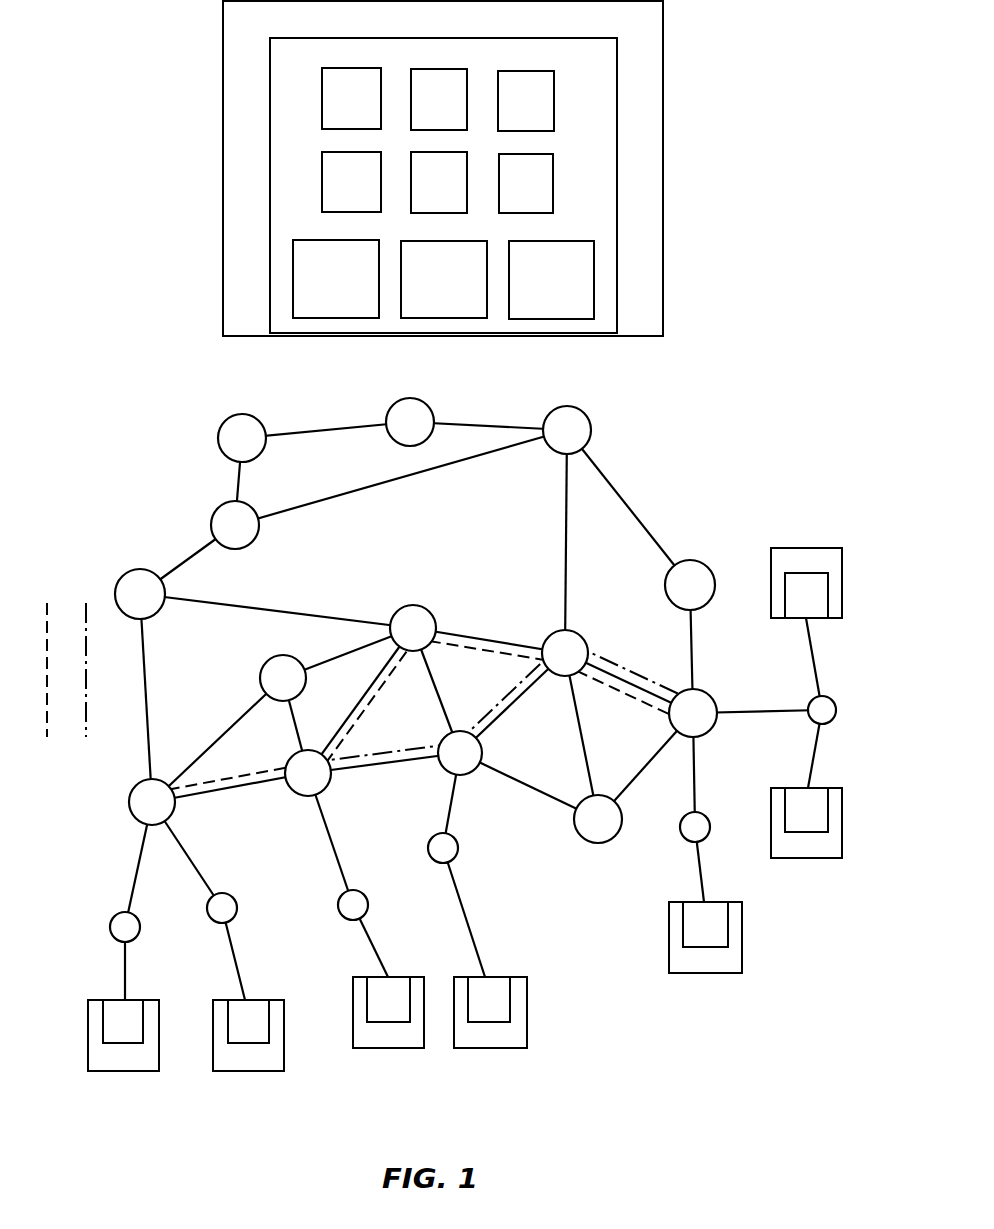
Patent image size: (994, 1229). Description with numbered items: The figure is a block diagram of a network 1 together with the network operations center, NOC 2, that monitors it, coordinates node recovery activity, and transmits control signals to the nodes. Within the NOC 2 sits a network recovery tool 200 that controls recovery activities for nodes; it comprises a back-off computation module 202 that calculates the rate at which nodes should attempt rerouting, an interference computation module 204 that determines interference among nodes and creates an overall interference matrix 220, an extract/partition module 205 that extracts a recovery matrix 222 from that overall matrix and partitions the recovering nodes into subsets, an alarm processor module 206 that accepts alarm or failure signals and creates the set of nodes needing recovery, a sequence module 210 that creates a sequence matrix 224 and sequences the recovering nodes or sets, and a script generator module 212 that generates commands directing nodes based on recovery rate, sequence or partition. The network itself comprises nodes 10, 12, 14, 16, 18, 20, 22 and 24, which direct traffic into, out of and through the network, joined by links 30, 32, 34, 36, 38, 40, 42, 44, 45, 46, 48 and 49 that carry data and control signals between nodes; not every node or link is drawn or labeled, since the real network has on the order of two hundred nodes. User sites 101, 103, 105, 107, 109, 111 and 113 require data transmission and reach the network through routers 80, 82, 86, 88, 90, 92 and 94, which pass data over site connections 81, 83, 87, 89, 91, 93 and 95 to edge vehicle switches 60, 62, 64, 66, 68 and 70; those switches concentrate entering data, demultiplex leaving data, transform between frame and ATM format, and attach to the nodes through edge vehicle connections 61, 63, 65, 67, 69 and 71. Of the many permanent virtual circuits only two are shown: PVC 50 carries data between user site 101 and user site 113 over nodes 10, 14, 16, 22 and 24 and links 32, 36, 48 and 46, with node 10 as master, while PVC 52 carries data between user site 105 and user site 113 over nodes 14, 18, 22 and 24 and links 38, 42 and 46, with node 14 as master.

The network 1 is at (184, 492).
The NOC 2 is at (223, 26).
The network recovery tool 200 is at (270, 100).
The back-off computation module 202 is at (334, 112).
The interference computation module 204 is at (421, 112).
The extract/partition module 205 is at (508, 113).
The alarm processor module 206 is at (334, 195).
The sequence module 210 is at (421, 195).
The script generator module 212 is at (508, 196).
The overall interference matrix 220 is at (314, 291).
The recovery matrix 222 is at (423, 291).
The sequence matrix 224 is at (531, 291).
The node 10 is at (140, 815).
The node 12 is at (271, 691).
The node 14 is at (296, 786).
The node 16 is at (401, 641).
The node 18 is at (448, 766).
The node 20 is at (586, 832).
The node 22 is at (553, 666).
The node 24 is at (681, 726).
The link 30 is at (232, 722).
The link 32 is at (228, 800).
The link 34 is at (340, 652).
The link 36 is at (362, 684).
The link 38 is at (385, 778).
The link 40 is at (446, 690).
The link 42 is at (516, 718).
The link 44 is at (588, 722).
The link 45 is at (535, 782).
The link 46 is at (640, 680).
The link 48 is at (492, 638).
The link 49 is at (630, 780).
The PVC 50 is at (252, 760).
The PVC 52 is at (385, 738).
The edge vehicle switch 60 is at (142, 932).
The edge vehicle connection 61 is at (140, 867).
The edge vehicle switch 62 is at (240, 908).
The edge vehicle connection 63 is at (185, 862).
The edge vehicle switch 64 is at (370, 905).
The edge vehicle connection 65 is at (328, 858).
The edge vehicle switch 66 is at (458, 852).
The edge vehicle connection 67 is at (455, 803).
The edge vehicle switch 68 is at (681, 832).
The edge vehicle connection 69 is at (700, 790).
The edge vehicle switch 70 is at (838, 705).
The edge vehicle connection 71 is at (768, 710).
The router 80 is at (113, 1034).
The site connection 81 is at (130, 970).
The router 82 is at (236, 1034).
The site connection 83 is at (245, 965).
The router 86 is at (376, 1011).
The site connection 87 is at (382, 945).
The router 88 is at (477, 1011).
The site connection 89 is at (473, 920).
The router 90 is at (694, 936).
The site connection 91 is at (706, 875).
The router 92 is at (794, 822).
The site connection 93 is at (818, 762).
The router 94 is at (794, 611).
The site connection 95 is at (818, 655).
The user site 101 is at (120, 1073).
The user site 103 is at (247, 1073).
The user site 105 is at (385, 1050).
The user site 107 is at (485, 1050).
The user site 109 is at (700, 975).
The user site 111 is at (803, 860).
The user site 113 is at (807, 547).